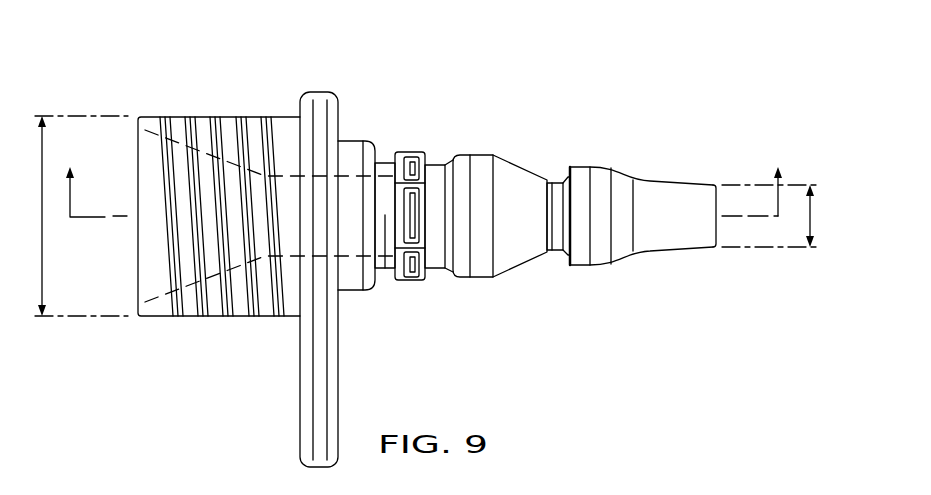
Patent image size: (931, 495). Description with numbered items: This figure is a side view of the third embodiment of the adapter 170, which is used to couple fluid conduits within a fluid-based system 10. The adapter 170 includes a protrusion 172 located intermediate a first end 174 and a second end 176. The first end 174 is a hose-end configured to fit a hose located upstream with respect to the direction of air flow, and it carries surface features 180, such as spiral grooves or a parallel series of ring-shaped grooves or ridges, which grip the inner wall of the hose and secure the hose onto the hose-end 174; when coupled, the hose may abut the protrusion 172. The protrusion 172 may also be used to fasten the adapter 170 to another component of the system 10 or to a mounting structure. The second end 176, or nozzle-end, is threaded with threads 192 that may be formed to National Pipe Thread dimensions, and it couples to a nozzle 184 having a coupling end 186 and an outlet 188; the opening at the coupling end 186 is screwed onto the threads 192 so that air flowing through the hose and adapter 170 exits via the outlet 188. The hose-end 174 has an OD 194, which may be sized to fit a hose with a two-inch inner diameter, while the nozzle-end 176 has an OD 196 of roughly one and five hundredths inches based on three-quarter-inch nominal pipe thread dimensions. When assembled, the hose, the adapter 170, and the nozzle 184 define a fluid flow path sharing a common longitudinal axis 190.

The system 10 is at (426, 216).
The adapter 170 is at (198, 66).
The protrusion 172 is at (318, 92).
The first end 174 is at (148, 116).
The second end 176 is at (387, 163).
The surface features 180 is at (224, 326).
The nozzle 184 is at (543, 143).
The coupling end 186 is at (412, 152).
The outlet 188 is at (717, 232).
The longitudinal axis 190 is at (90, 216).
The threads 192 is at (386, 286).
The OD 194 is at (44, 249).
The OD 196 is at (808, 215).